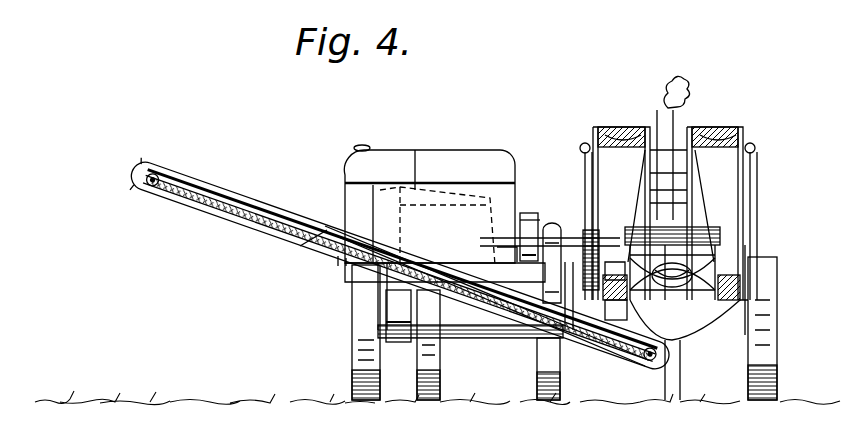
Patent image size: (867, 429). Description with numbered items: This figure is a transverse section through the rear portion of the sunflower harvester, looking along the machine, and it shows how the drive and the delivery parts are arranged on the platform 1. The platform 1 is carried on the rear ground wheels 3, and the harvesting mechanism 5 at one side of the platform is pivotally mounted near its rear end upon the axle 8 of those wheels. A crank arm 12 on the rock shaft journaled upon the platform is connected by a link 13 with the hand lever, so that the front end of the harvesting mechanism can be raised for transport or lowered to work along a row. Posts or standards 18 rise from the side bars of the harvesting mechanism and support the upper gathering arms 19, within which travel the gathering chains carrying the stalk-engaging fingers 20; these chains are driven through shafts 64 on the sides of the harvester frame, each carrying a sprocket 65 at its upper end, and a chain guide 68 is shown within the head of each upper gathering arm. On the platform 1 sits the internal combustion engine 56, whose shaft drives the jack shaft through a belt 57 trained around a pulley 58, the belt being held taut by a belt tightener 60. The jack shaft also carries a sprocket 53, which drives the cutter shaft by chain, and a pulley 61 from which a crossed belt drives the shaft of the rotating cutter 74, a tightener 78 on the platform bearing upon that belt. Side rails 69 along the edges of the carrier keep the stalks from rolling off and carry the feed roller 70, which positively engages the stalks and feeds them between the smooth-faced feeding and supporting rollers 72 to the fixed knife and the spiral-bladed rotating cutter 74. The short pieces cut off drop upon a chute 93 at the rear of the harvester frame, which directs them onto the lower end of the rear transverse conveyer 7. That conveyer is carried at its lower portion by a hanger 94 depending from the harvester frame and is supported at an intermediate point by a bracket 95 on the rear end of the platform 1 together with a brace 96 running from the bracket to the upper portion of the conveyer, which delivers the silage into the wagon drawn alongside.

The platform 1 is at (342, 270).
The rear ground wheels 3 is at (762, 340).
The harvesting mechanism 5 is at (730, 275).
The rear transverse conveyer 7 is at (399, 266).
The axle 8 is at (470, 308).
The crank arm 12 is at (488, 356).
The link 13 is at (365, 344).
The posts or standards 18 is at (594, 136).
The upper gathering arms 19 is at (616, 126).
The stalk-engaging fingers 20 is at (660, 177).
The sprocket 53 is at (590, 231).
The internal combustion engine 56 is at (444, 213).
The belt 57 is at (531, 212).
The pulley 58 is at (522, 222).
The belt tightener 60 is at (606, 250).
The pulley 61 is at (556, 224).
The shaft 64 is at (590, 185).
The sprocket 65 is at (580, 158).
The guide 68 is at (634, 126).
The side rails 69 is at (722, 233).
The feed roller 70 is at (689, 250).
The feeding and supporting rollers 72 is at (676, 288).
The rotating knife or cutter 74 is at (738, 320).
The tightener 78 is at (530, 239).
The chute 93 is at (690, 322).
The hanger 94 is at (628, 318).
The bracket 95 is at (392, 282).
The brace 96 is at (312, 247).